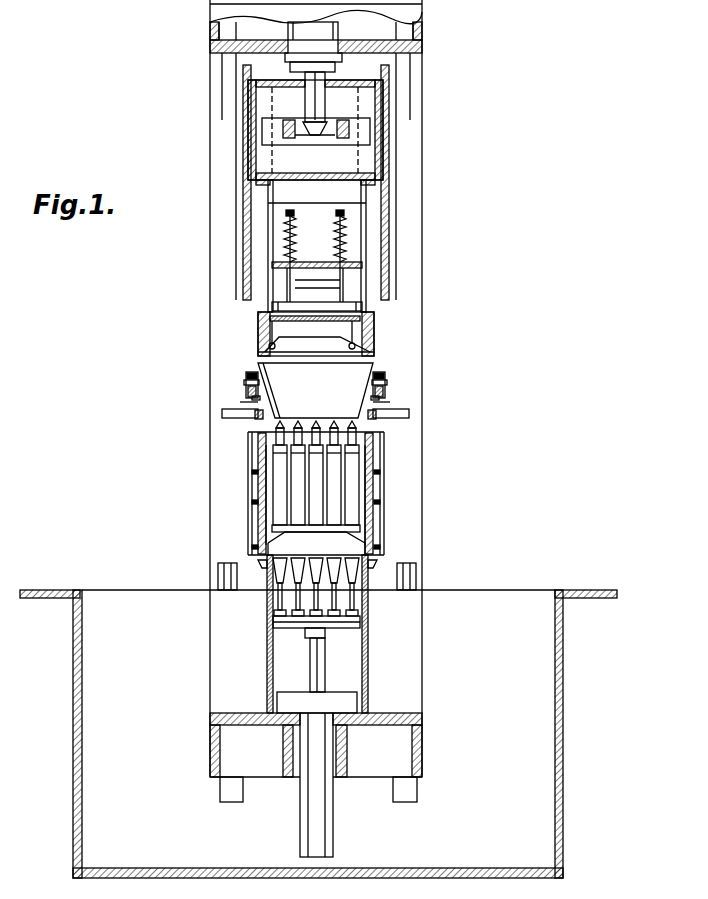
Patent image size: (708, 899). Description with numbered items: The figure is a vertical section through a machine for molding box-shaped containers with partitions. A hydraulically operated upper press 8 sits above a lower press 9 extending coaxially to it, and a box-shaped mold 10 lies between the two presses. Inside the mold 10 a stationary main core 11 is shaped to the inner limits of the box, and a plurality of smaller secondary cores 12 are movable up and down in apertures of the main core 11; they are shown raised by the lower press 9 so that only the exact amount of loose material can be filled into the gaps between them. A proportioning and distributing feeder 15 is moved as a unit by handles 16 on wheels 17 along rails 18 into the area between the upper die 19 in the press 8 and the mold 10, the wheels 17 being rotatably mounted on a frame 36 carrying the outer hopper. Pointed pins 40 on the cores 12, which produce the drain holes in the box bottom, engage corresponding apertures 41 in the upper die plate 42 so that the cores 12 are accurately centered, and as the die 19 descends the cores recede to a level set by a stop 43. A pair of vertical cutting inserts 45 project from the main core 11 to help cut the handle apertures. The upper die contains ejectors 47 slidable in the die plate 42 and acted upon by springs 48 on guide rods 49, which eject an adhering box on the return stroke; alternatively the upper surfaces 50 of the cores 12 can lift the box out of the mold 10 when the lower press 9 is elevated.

The upper press 8 is at (363, 110).
The lower press 9 is at (320, 814).
The box-shaped mold 10 is at (252, 485).
The stationary main core 11 is at (352, 547).
The secondary cores 12 is at (266, 498).
The proportioning and distributing feeder 15 is at (372, 385).
The handles 16 is at (222, 412).
The wheels 17 is at (244, 380).
The rails 18 is at (252, 398).
The upper die 19 is at (262, 318).
The frame 36 is at (250, 403).
The pointed pins 40 is at (352, 428).
The apertures 41 is at (316, 335).
The upper die plate 42 is at (365, 325).
The stop 43 is at (357, 703).
The vertical cutting inserts 45 is at (362, 538).
The ejectors 47 is at (258, 344).
The springs 48 is at (333, 227).
The guide rods 49 is at (333, 279).
The upper surfaces 50 is at (262, 450).